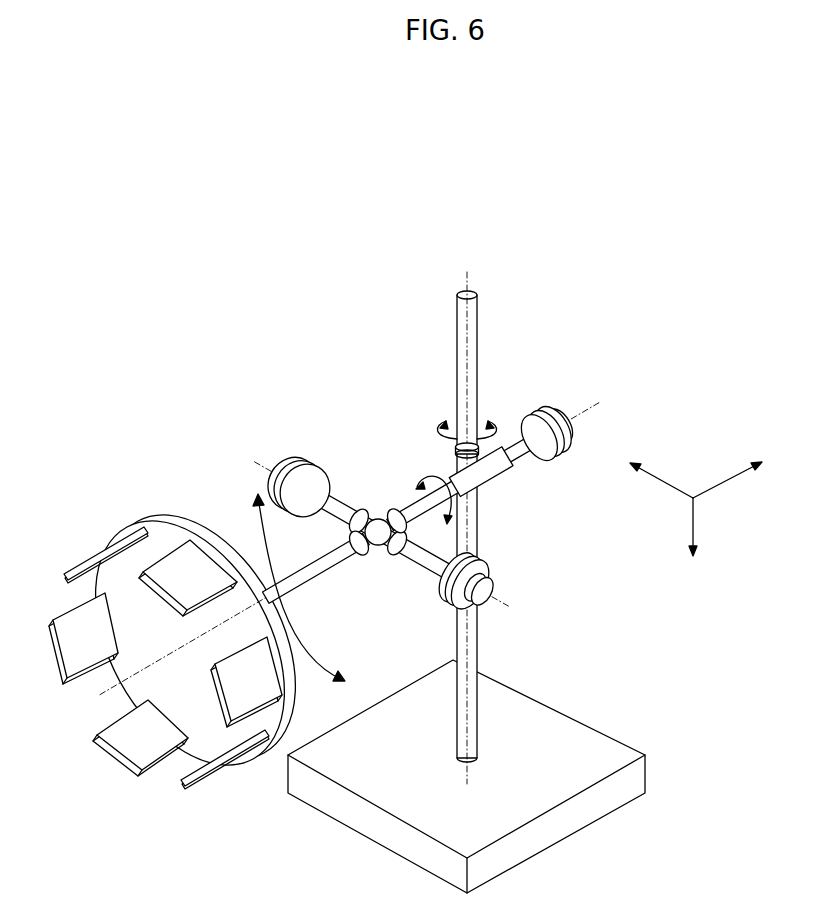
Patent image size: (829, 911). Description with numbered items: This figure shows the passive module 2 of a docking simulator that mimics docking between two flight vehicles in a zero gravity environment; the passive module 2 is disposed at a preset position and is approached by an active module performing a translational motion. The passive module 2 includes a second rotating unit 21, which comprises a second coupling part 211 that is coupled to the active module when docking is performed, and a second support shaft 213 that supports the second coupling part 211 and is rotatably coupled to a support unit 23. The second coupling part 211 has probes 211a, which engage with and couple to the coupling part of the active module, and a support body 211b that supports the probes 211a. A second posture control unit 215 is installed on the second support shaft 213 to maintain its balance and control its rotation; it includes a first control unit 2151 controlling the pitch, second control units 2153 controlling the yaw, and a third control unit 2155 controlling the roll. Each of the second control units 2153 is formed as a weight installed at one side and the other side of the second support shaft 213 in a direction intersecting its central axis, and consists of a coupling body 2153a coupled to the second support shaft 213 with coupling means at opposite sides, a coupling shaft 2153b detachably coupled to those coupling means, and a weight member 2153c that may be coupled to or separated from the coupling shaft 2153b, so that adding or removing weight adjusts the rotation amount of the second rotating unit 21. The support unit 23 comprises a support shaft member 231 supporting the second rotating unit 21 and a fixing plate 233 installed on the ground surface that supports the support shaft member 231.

The passive module 2 is at (656, 159).
The second rotating unit 21 is at (332, 173).
The second coupling part 211 is at (125, 385).
The probes 211a is at (80, 557).
The support body 211b is at (150, 517).
The second support shaft 213 is at (245, 590).
The second posture control unit 215 is at (467, 197).
The first control unit 2151 is at (538, 407).
The second control units 2153 is at (367, 343).
The coupling body 2153a is at (380, 514).
The coupling shaft 2153b is at (345, 500).
The weight member 2153c is at (272, 467).
The third control unit 2155 is at (455, 455).
The support unit 23 is at (658, 615).
The support shaft member 231 is at (477, 725).
The fixing plate 233 is at (590, 747).